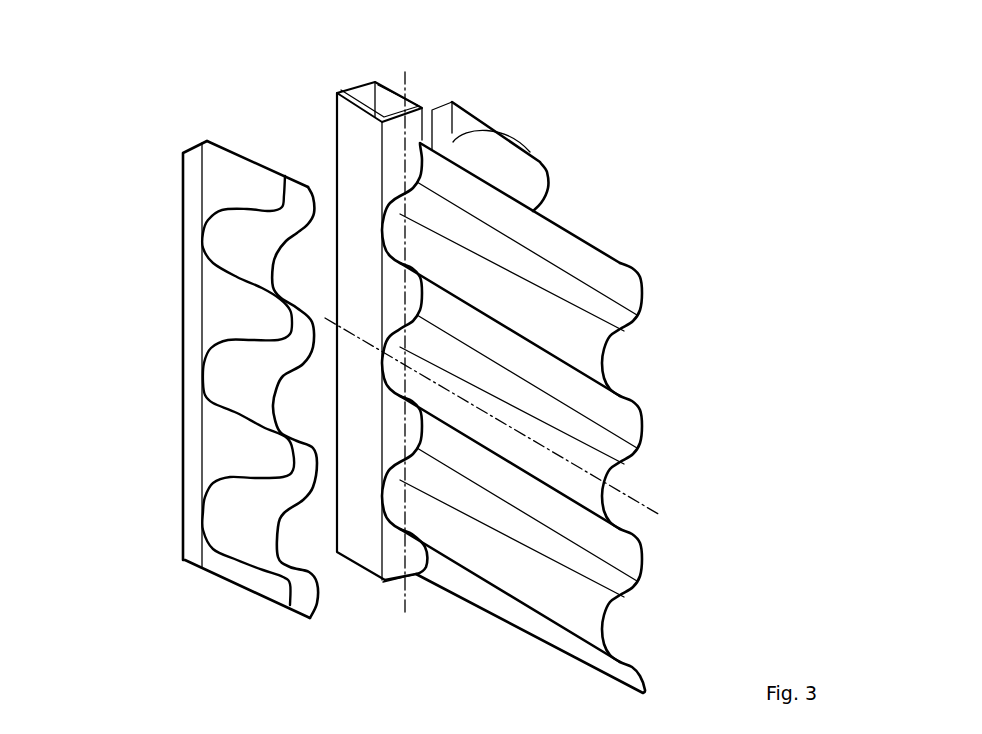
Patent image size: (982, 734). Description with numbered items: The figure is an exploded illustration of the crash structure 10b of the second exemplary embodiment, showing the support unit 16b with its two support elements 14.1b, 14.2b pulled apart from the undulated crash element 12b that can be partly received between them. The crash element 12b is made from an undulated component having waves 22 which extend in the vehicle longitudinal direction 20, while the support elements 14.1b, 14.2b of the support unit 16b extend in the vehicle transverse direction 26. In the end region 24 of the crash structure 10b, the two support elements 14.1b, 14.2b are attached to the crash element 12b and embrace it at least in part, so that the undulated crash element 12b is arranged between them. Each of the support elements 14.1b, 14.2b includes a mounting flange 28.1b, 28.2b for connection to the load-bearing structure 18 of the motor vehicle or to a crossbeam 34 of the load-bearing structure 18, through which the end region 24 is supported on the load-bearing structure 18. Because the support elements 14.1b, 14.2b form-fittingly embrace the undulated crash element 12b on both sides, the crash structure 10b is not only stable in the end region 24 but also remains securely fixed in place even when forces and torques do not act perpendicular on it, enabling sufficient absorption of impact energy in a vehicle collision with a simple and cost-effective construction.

The crash structure 10b is at (722, 282).
The crash element 12b is at (597, 263).
The support element 14.1b is at (230, 309).
The support element 14.2b is at (523, 168).
The support unit 16b is at (255, 145).
The load-bearing structure 18 is at (340, 122).
The crossbeam 34 is at (379, 331).
The vehicle longitudinal direction 20 is at (657, 514).
The waves 22 is at (570, 253).
The end region 24 is at (430, 612).
The vehicle transverse direction 26 is at (408, 605).
The mounting flange 28.1b is at (192, 182).
The mounting flange 28.2b is at (439, 106).